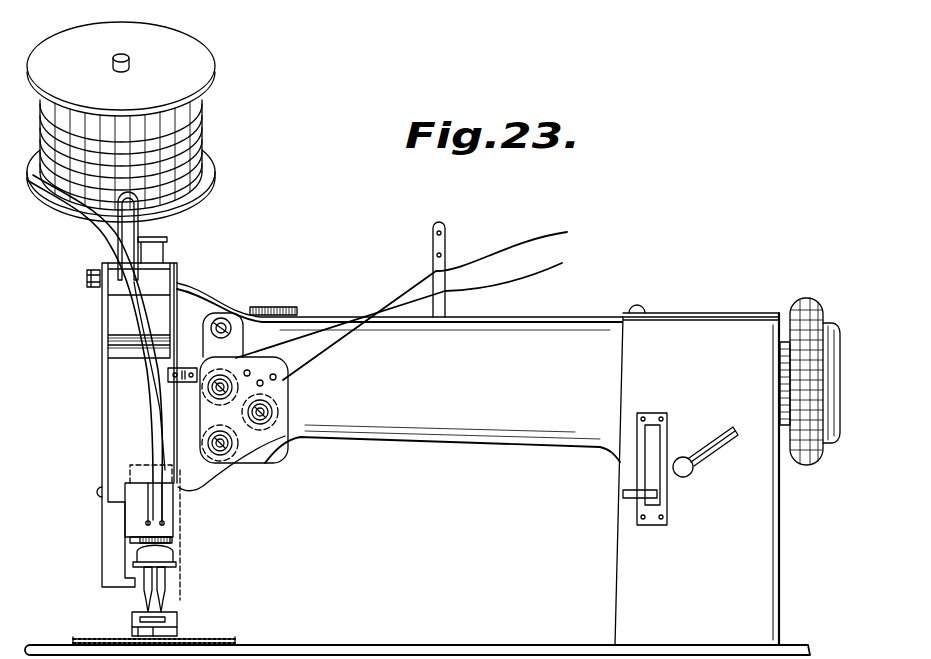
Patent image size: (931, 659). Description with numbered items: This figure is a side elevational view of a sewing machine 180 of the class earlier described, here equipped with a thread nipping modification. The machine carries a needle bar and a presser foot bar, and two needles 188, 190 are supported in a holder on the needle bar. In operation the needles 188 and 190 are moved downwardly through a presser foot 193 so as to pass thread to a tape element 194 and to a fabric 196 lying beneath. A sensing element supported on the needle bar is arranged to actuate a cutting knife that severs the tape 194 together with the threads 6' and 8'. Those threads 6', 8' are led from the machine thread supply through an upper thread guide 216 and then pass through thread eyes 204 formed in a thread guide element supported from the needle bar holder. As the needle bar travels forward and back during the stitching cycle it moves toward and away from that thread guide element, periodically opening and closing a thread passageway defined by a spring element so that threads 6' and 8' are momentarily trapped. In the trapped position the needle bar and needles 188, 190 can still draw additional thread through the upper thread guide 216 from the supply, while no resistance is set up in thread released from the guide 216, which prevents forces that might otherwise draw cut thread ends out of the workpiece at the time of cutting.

The sewing machine 180 is at (430, 410).
The needle 188 is at (151, 592).
The needle 190 is at (160, 595).
The presser foot 193 is at (175, 631).
The tape element 194 is at (138, 376).
The fabric 196 is at (226, 641).
The thread eyes 204 is at (133, 535).
The upper thread guide 216 is at (135, 504).
The thread 6' is at (140, 521).
The thread 8' is at (188, 502).